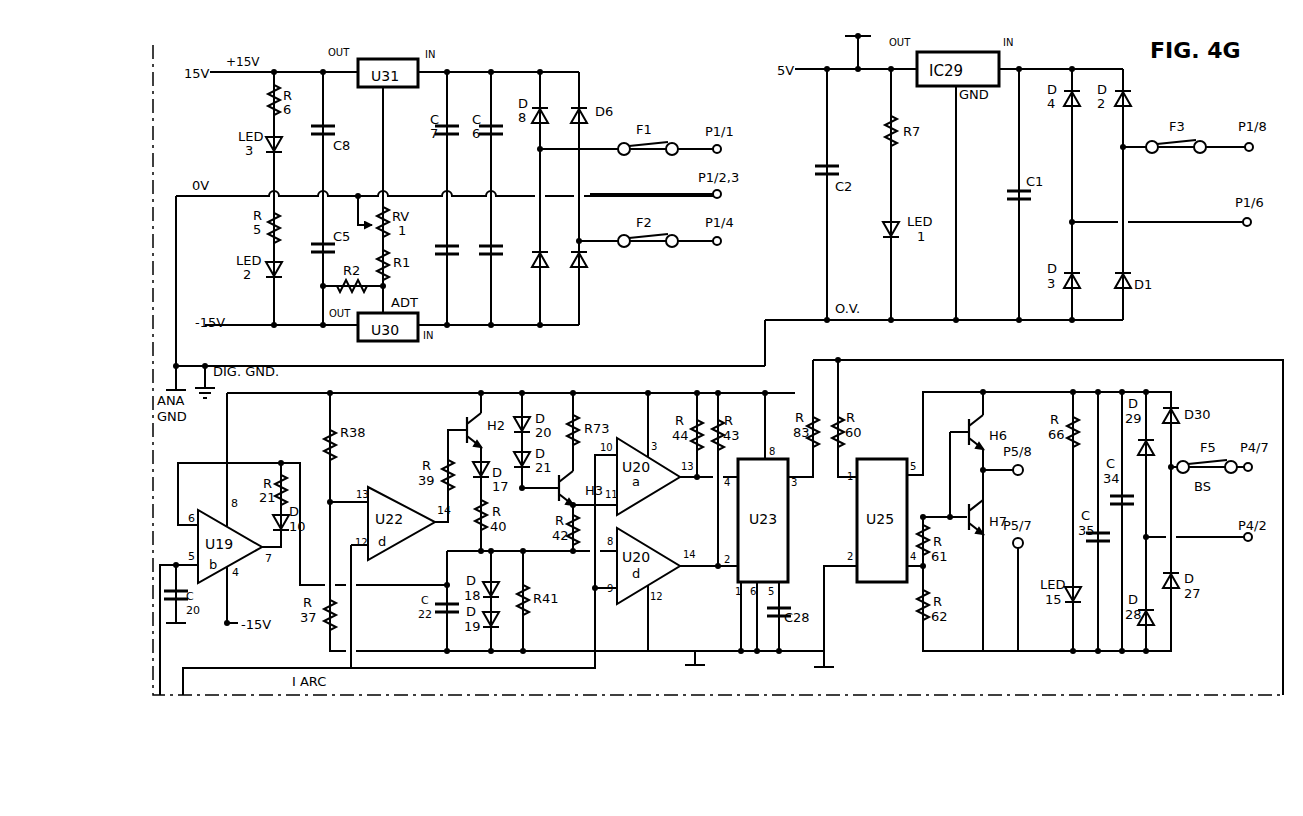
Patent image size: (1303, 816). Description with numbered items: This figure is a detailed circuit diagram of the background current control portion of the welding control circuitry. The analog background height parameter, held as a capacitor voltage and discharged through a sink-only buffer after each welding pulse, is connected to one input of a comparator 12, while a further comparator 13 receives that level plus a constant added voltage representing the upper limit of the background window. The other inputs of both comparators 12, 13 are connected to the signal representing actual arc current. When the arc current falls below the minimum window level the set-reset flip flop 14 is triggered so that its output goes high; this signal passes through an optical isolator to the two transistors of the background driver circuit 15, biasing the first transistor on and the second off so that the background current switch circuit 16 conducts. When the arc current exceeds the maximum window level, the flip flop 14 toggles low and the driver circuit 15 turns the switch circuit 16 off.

The comparator 12 is at (681, 578).
The comparator 13 is at (651, 499).
The set-reset flip flop 14 is at (792, 502).
The background driver circuit 15 is at (1064, 482).
The background current switch circuit 16 is at (1238, 530).